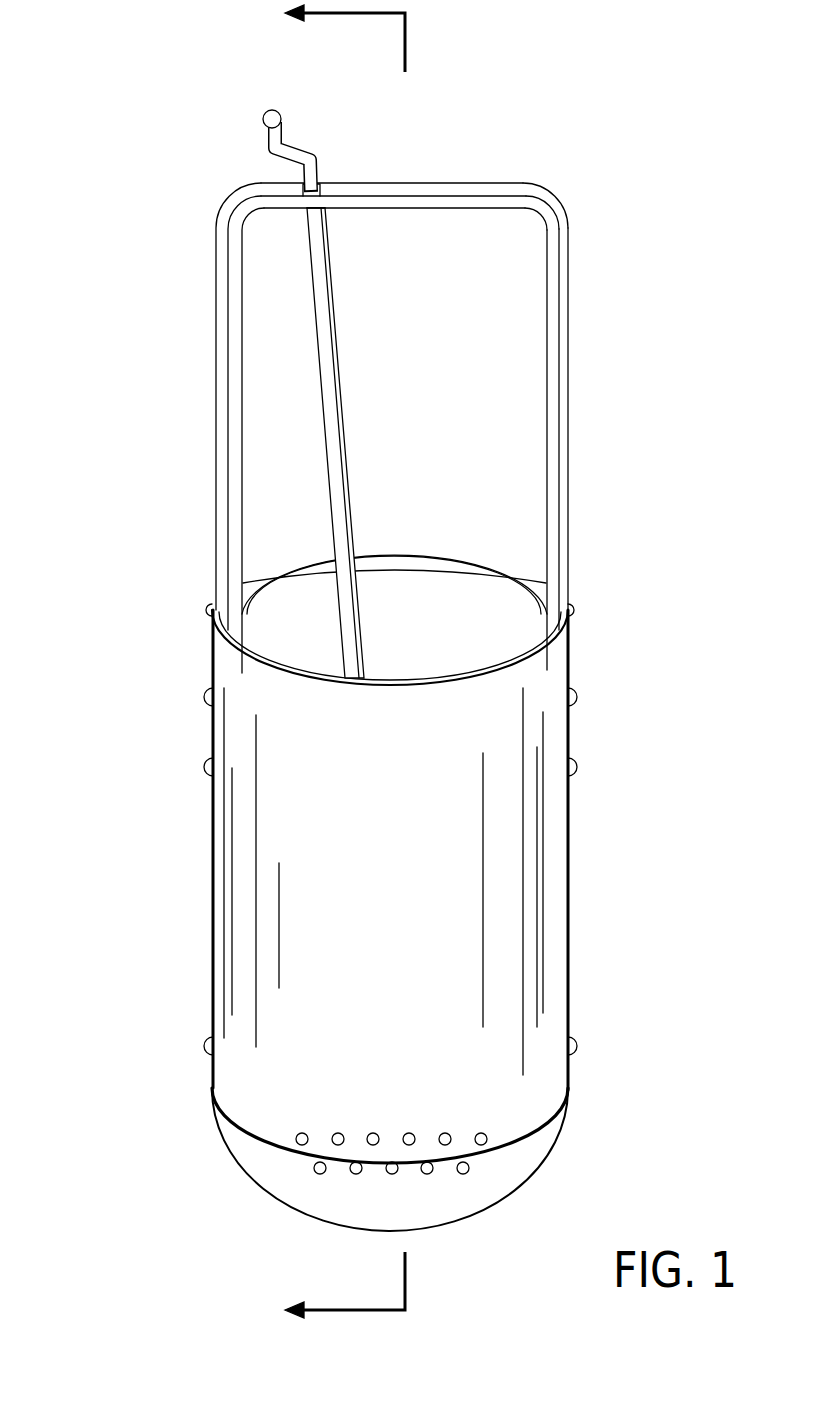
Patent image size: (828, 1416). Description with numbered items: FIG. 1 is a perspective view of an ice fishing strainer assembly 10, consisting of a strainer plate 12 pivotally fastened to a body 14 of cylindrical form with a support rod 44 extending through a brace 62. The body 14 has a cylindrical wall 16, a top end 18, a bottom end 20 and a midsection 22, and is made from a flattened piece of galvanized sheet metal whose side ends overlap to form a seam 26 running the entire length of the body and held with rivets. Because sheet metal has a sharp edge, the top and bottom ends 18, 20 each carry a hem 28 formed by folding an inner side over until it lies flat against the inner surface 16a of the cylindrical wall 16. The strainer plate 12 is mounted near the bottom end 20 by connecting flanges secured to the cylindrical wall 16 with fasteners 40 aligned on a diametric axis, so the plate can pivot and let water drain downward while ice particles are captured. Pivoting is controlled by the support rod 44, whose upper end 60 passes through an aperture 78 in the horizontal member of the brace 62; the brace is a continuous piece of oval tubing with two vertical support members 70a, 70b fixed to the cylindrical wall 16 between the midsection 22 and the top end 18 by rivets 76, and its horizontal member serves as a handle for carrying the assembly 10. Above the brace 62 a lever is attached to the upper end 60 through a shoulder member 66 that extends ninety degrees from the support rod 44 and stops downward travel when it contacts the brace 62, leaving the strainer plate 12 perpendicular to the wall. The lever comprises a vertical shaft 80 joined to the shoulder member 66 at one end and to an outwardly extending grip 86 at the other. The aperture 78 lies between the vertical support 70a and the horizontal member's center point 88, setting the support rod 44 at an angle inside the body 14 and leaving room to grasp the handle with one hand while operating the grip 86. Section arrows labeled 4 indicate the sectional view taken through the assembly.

The section line 4- 4 is at (356, 661).
The ice fishing strainer assembly 10 is at (112, 1107).
The strainer plate 12 is at (553, 1147).
The body 14 is at (373, 965).
The cylindrical wall 16 is at (212, 960).
The inner surface of the cylindrical wall 16a is at (437, 590).
The top end 18 is at (210, 616).
The bottom end 20 is at (572, 1082).
The midsection 22 is at (212, 848).
The seam 26 is at (572, 862).
The hem 28 is at (470, 556).
The fasteners 40 is at (204, 1042).
The support rod 44 is at (344, 416).
The upper end of the support rod 60 is at (327, 225).
The brace 62 is at (486, 183).
The shoulder member 66 is at (287, 136).
The vertical support member 70a is at (215, 426).
The vertical support member 70b is at (569, 433).
The rivets 76 is at (574, 692).
The aperture 78 is at (300, 183).
The vertical shaft 80 is at (268, 142).
The grip 86 is at (264, 112).
The center point of the horizontal member 88 is at (400, 183).